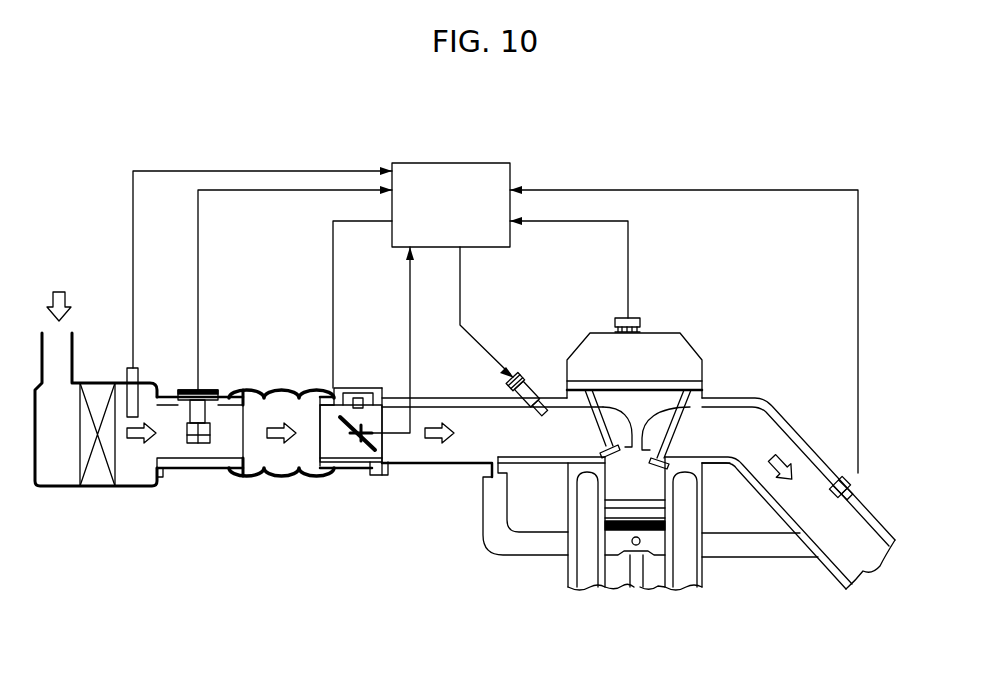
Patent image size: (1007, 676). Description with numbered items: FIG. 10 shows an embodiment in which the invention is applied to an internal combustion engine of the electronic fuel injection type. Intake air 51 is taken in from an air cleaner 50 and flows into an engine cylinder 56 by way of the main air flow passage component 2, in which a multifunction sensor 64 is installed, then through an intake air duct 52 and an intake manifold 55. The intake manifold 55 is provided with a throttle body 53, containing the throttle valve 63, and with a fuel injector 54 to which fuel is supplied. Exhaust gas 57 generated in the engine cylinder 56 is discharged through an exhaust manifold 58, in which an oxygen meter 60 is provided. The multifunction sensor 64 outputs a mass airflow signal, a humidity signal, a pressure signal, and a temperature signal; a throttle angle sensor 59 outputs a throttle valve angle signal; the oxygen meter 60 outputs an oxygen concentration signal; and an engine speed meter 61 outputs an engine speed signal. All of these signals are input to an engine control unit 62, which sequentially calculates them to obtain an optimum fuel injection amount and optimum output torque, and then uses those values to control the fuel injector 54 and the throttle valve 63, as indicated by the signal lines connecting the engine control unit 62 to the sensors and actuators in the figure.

The main air flow passage component 2 is at (200, 470).
The air cleaner 50 is at (68, 487).
The intake air 51 is at (57, 290).
The intake air duct 52 is at (285, 470).
The throttle body 53 is at (373, 470).
The fuel injector 54 is at (520, 376).
The intake manifold 55 is at (446, 465).
The engine cylinder 56 is at (620, 580).
The exhaust gas 57 is at (780, 458).
The exhaust manifold 58 is at (728, 399).
The throttle angle sensor 59 is at (358, 388).
The oxygen meter 60 is at (852, 482).
The engine speed meter 61 is at (638, 318).
The engine control unit 62 is at (512, 166).
The throttle valve 63 is at (350, 456).
The multifunction sensor 64 is at (212, 390).